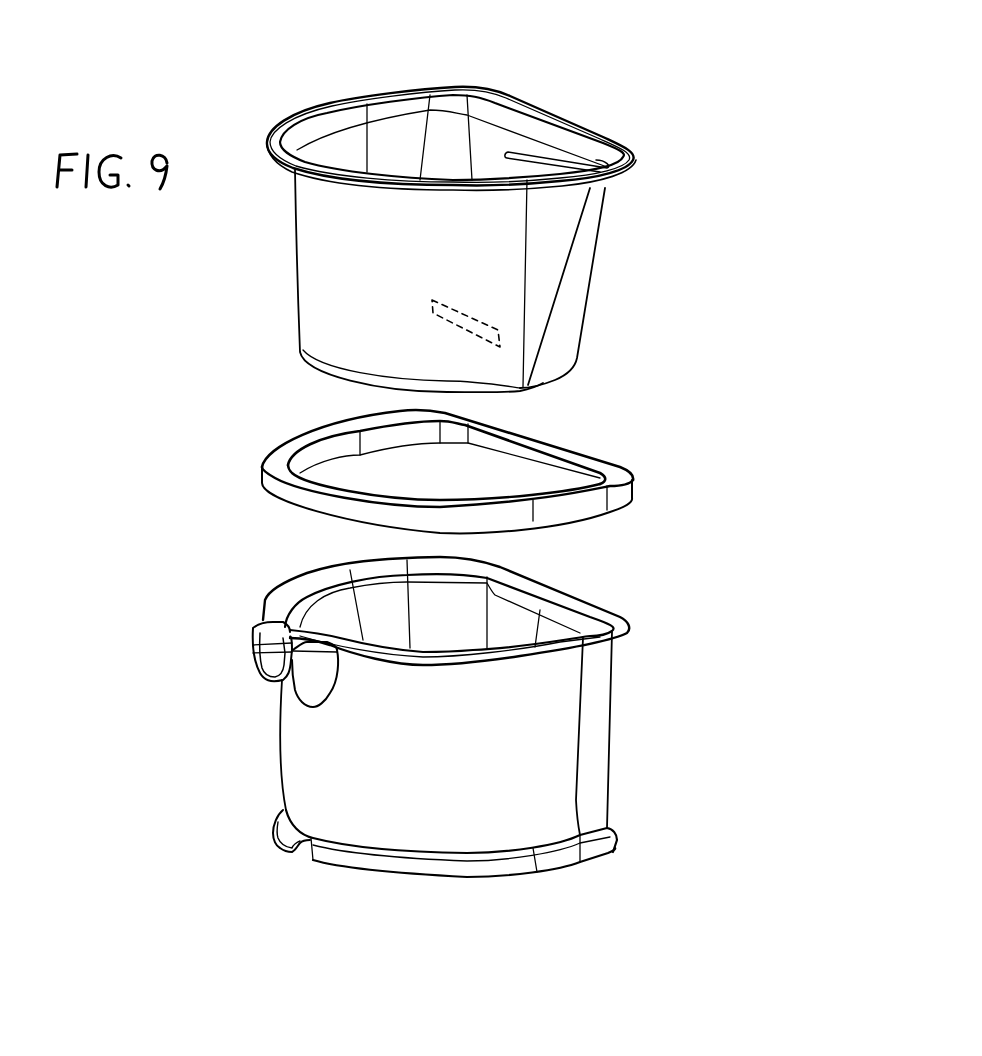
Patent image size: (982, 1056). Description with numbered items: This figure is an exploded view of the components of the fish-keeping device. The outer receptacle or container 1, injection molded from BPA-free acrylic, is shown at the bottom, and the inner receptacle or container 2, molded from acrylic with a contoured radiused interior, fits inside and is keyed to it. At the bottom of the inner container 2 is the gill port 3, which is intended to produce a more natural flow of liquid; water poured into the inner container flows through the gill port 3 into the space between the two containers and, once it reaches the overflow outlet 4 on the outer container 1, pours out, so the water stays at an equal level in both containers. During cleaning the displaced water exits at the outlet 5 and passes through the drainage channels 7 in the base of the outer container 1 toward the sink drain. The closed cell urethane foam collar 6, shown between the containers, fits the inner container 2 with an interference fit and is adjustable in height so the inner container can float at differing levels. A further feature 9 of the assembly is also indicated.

The outer receptacle/container 1 is at (524, 683).
The inner receptacle/container 2 is at (553, 124).
The gill port 3 is at (500, 333).
The overflow outlet 4 is at (613, 167).
The outlet 5 is at (252, 650).
The closed cell urethane foam collar 6 is at (280, 450).
The drainage channels 7 is at (277, 848).
The inner wall ledge 9 is at (490, 627).